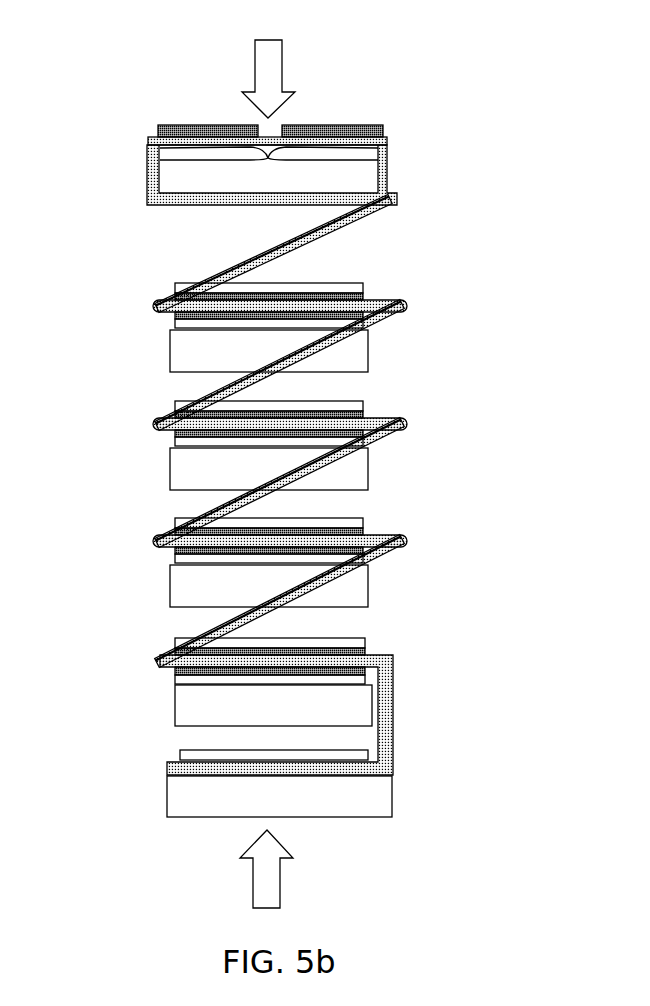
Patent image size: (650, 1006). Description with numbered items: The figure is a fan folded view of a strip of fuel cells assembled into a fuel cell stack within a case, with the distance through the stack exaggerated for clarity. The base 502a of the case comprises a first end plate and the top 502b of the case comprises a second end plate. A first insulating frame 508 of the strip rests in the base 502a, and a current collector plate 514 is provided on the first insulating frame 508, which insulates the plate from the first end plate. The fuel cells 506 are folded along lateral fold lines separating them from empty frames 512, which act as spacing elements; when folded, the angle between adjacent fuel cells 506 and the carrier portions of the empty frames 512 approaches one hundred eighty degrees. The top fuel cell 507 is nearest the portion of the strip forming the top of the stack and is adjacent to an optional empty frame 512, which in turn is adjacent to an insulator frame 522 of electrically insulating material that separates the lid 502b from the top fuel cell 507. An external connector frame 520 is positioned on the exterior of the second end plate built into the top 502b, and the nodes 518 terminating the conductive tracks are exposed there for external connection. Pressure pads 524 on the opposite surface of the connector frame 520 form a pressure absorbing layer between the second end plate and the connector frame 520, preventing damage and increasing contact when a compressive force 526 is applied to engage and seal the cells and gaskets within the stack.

The base of the case 502a is at (385, 797).
The top of the case 502b is at (372, 172).
The fuel cells 506 is at (183, 470).
The top fuel cell 507 is at (187, 358).
The first insulating frame 508 is at (185, 760).
The empty frames 512 is at (323, 238).
The current collector plate 514 is at (308, 758).
The nodes 518 is at (233, 125).
The external connector frame 520 is at (148, 140).
The insulator frame 522 is at (148, 185).
The pressure pads 524 is at (343, 125).
The compressive force 526 is at (282, 75).